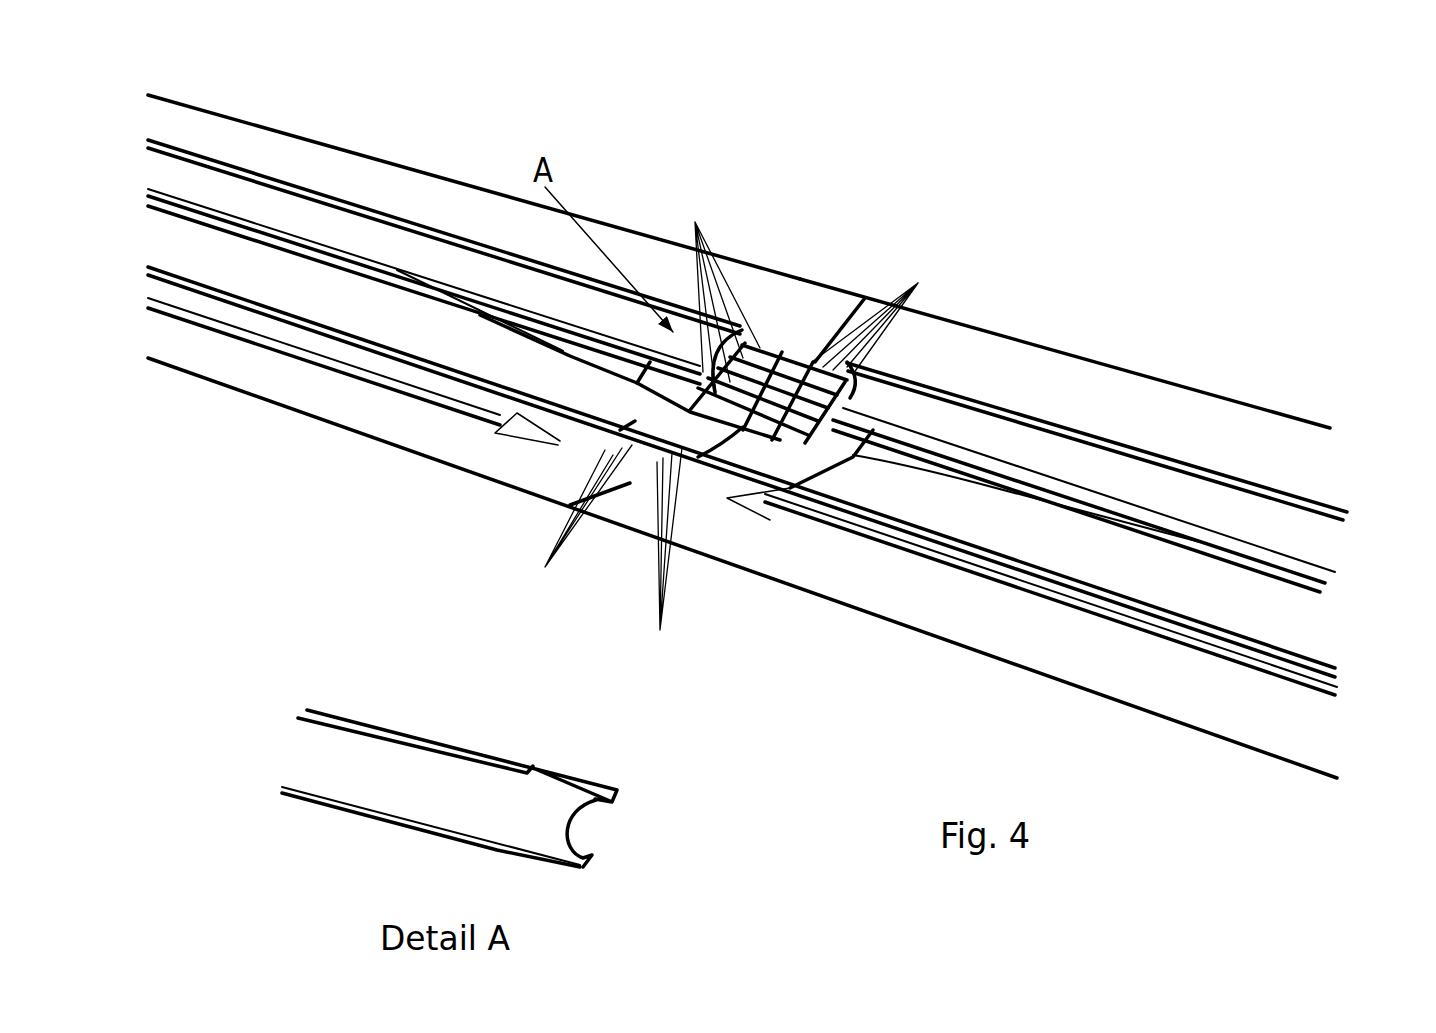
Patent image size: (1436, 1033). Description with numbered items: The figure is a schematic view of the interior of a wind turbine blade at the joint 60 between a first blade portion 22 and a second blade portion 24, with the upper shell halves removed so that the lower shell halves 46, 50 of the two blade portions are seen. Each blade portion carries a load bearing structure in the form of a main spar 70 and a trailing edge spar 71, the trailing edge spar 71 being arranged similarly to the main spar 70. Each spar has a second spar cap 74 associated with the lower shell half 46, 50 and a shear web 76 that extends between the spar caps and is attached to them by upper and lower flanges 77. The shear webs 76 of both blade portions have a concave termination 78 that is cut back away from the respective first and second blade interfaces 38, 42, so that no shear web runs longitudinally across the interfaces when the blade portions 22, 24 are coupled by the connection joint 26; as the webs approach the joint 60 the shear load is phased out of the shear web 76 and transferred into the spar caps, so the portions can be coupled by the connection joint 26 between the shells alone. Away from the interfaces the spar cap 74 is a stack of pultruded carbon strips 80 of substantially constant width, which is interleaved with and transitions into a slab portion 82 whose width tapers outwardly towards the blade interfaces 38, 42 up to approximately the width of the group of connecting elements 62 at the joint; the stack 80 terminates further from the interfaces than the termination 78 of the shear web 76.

The first blade portion 22 is at (1122, 385).
The second blade portion 24 is at (425, 203).
The connection joint 26 is at (760, 247).
The first blade interface 38 is at (735, 448).
The second blade interface 42 is at (700, 432).
The lower shell half 46 is at (925, 592).
The lower shell half 50 is at (367, 415).
The joint 60 is at (848, 245).
The connecting elements 62 is at (733, 428).
The main spar 70 is at (1327, 540).
The trailing edge spar 71 is at (1337, 682).
The second spar cap 74 is at (417, 283).
The shear web 76 is at (215, 192).
The upper and lower flanges 77 is at (488, 757).
The termination 78 is at (530, 427).
The stack of pultruded carbon strips 80 is at (286, 248).
The slab portion 82 is at (610, 350).